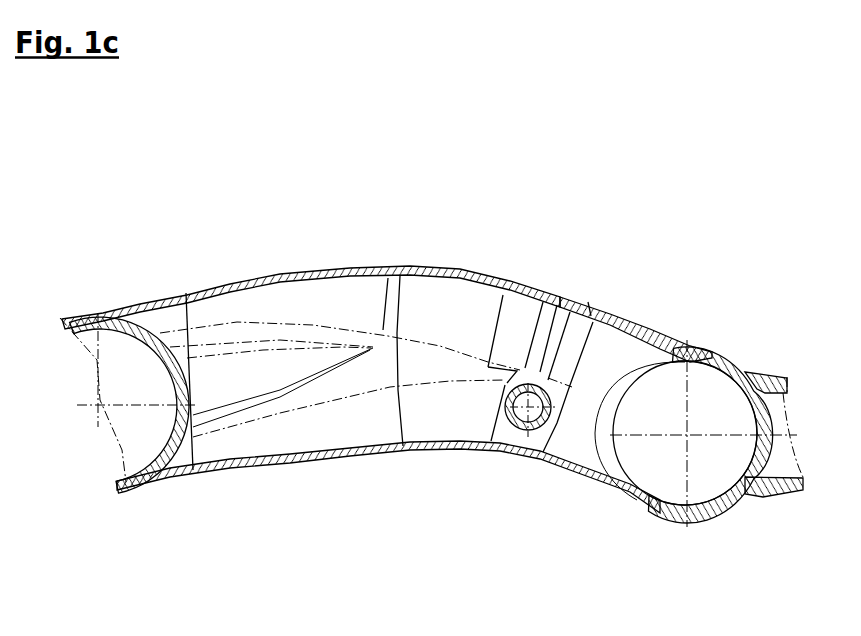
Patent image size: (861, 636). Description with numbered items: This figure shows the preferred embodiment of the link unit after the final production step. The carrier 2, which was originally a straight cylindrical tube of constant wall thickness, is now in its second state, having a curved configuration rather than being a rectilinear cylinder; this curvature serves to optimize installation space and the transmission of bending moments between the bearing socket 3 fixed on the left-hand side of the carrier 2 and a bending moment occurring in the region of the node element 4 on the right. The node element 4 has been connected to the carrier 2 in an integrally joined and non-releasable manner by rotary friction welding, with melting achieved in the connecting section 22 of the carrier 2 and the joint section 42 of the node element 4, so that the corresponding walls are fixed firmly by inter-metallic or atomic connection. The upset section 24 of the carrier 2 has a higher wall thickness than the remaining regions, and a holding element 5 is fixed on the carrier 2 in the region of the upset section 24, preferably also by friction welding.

The carrier 2 is at (361, 337).
The bearing socket 3 is at (123, 552).
The node element 4 is at (699, 365).
The holding element 5 is at (500, 528).
The connecting section 22 is at (600, 309).
The upset section 24 is at (590, 309).
The joint section 42 is at (657, 240).